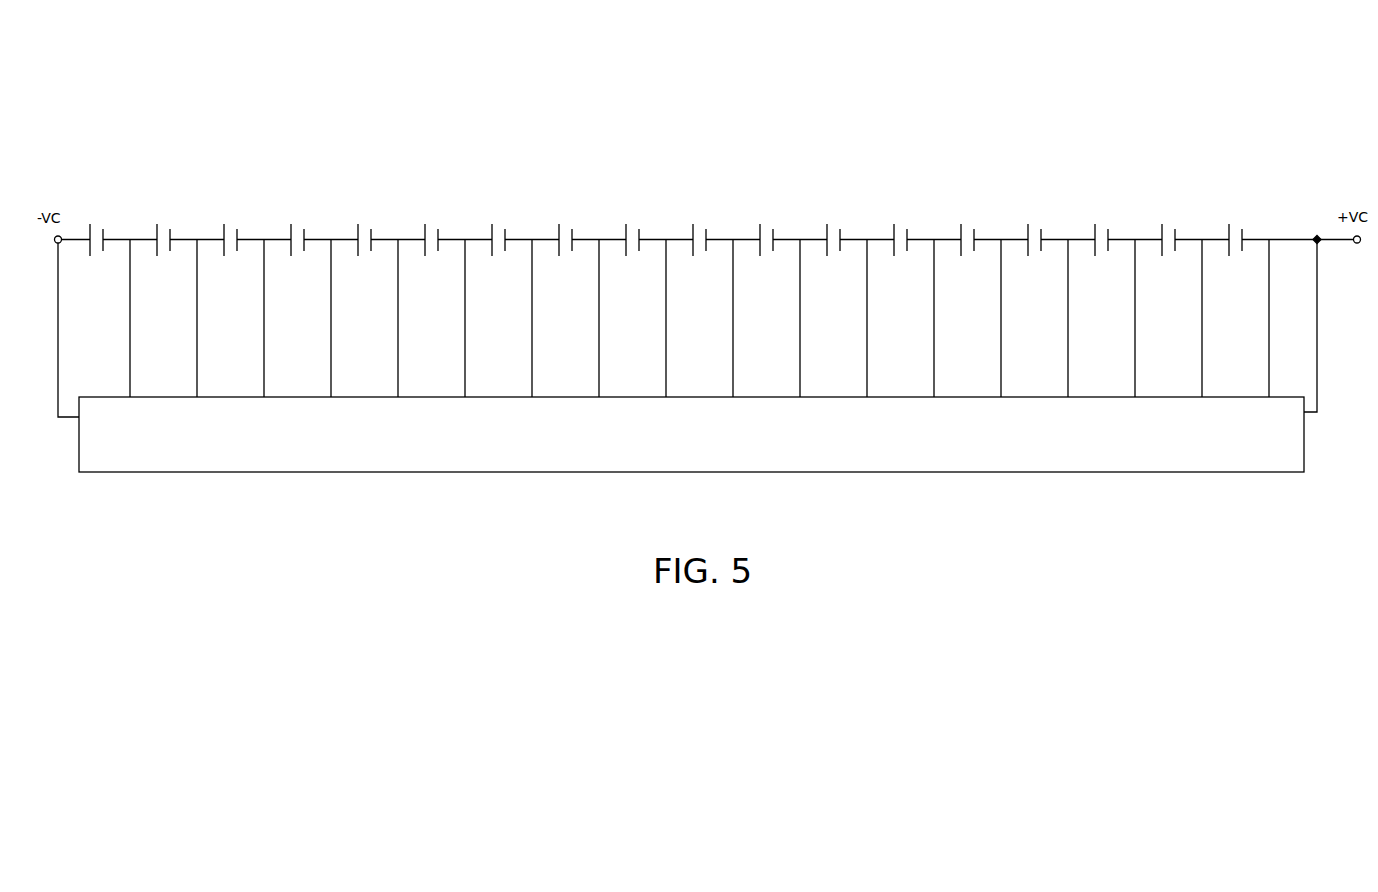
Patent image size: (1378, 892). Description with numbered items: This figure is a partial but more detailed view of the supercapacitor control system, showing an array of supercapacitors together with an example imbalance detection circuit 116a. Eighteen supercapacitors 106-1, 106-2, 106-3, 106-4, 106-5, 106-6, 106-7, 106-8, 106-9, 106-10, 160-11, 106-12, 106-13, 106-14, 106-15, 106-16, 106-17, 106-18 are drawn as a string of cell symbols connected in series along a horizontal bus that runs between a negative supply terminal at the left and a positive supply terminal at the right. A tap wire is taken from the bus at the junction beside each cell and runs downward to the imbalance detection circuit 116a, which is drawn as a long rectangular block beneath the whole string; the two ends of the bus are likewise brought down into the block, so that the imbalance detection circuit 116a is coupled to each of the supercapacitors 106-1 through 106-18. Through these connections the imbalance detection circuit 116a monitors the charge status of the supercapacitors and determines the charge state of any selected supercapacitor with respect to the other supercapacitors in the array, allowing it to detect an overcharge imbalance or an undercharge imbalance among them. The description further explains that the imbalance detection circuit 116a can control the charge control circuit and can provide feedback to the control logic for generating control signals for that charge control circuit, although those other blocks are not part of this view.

The supercapacitor 106-1 is at (90, 237).
The supercapacitor 106-2 is at (157, 237).
The supercapacitor 106-3 is at (224, 237).
The supercapacitor 106-4 is at (291, 237).
The supercapacitor 106-5 is at (358, 237).
The supercapacitor 106-6 is at (425, 237).
The supercapacitor 106-7 is at (492, 237).
The supercapacitor 106-8 is at (559, 237).
The supercapacitor 106-9 is at (626, 237).
The supercapacitor 106-10 is at (693, 237).
The supercapacitor 160-11 is at (760, 237).
The supercapacitor 106-12 is at (827, 237).
The supercapacitor 106-13 is at (894, 237).
The supercapacitor 106-14 is at (961, 237).
The supercapacitor 106-15 is at (1028, 237).
The supercapacitor 106-16 is at (1095, 237).
The supercapacitor 106-17 is at (1162, 237).
The supercapacitor 106-18 is at (1229, 237).
The imbalance detection circuit 116a is at (728, 458).